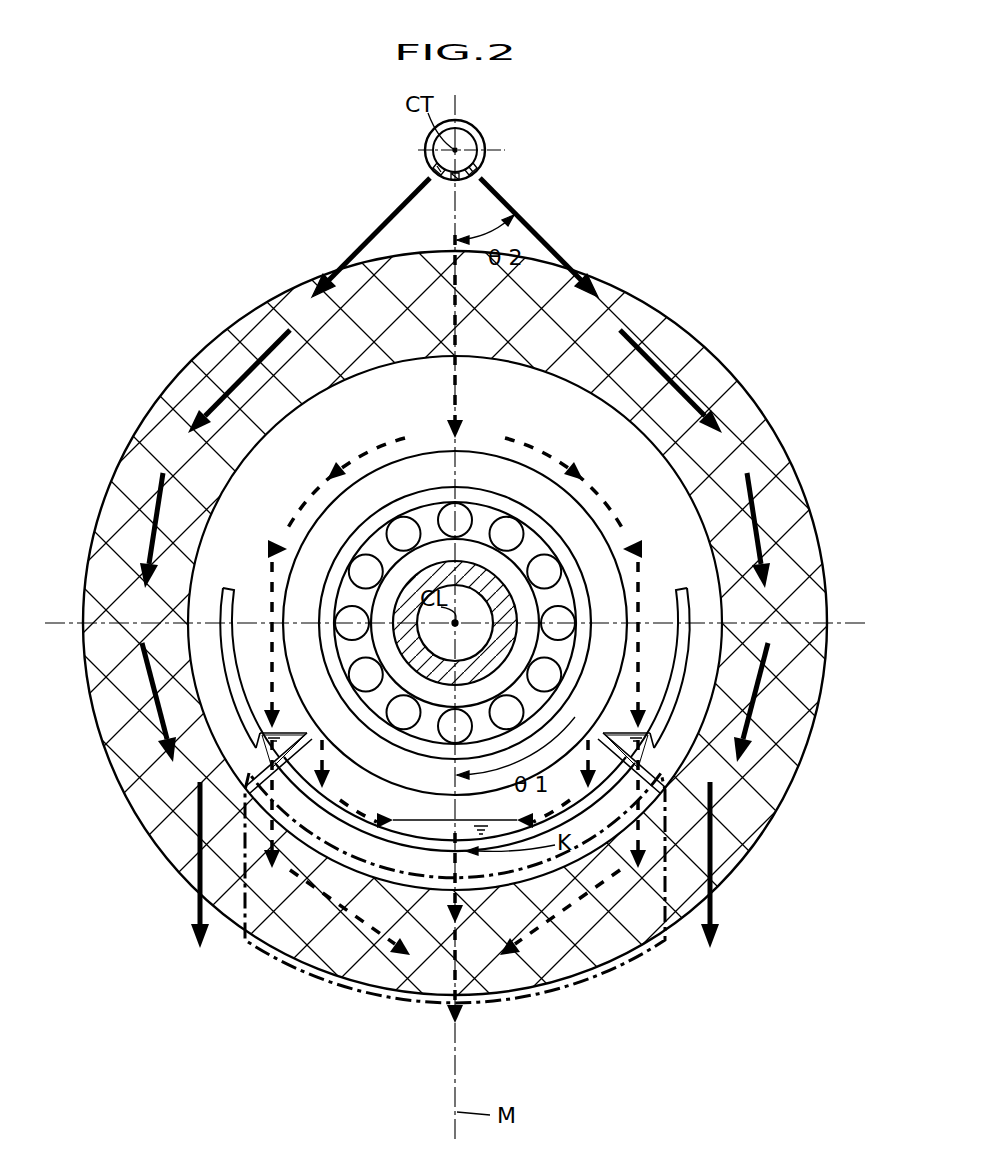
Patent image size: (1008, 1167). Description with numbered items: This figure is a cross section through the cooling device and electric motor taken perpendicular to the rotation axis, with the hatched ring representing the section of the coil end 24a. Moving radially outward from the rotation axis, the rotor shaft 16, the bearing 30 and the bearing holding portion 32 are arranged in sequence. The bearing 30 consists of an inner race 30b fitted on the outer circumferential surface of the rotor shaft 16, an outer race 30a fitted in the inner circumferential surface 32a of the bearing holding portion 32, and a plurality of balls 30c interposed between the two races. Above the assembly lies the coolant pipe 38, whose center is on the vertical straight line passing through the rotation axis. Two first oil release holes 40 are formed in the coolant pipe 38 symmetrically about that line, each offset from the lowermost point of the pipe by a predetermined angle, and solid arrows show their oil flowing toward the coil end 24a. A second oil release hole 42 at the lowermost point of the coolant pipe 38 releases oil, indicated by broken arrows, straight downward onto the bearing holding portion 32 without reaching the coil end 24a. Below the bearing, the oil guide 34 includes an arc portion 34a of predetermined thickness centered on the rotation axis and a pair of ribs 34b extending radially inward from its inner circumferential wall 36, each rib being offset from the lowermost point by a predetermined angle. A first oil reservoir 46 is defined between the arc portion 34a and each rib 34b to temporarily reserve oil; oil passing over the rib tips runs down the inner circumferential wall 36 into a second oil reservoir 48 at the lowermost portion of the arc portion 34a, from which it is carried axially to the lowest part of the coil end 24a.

The rotor shaft 16 is at (437, 573).
The coil end 24a is at (680, 343).
The bearing 30 is at (320, 552).
The outer race 30a is at (327, 587).
The inner race 30b is at (473, 550).
The balls 30c is at (402, 530).
The bearing holding portion 32 is at (553, 533).
The inner circumferential surface 32a is at (500, 596).
The oil guide 34 is at (384, 863).
The arc portion 34a is at (330, 813).
The ribs 34b is at (268, 773).
The inner circumferential wall 36 is at (677, 637).
The coolant pipe 38 is at (494, 120).
The first oil release holes 40 is at (435, 169).
The second oil release hole 42 is at (457, 180).
The first oil reservoir 46 is at (245, 744).
The second oil reservoir 48 is at (442, 864).